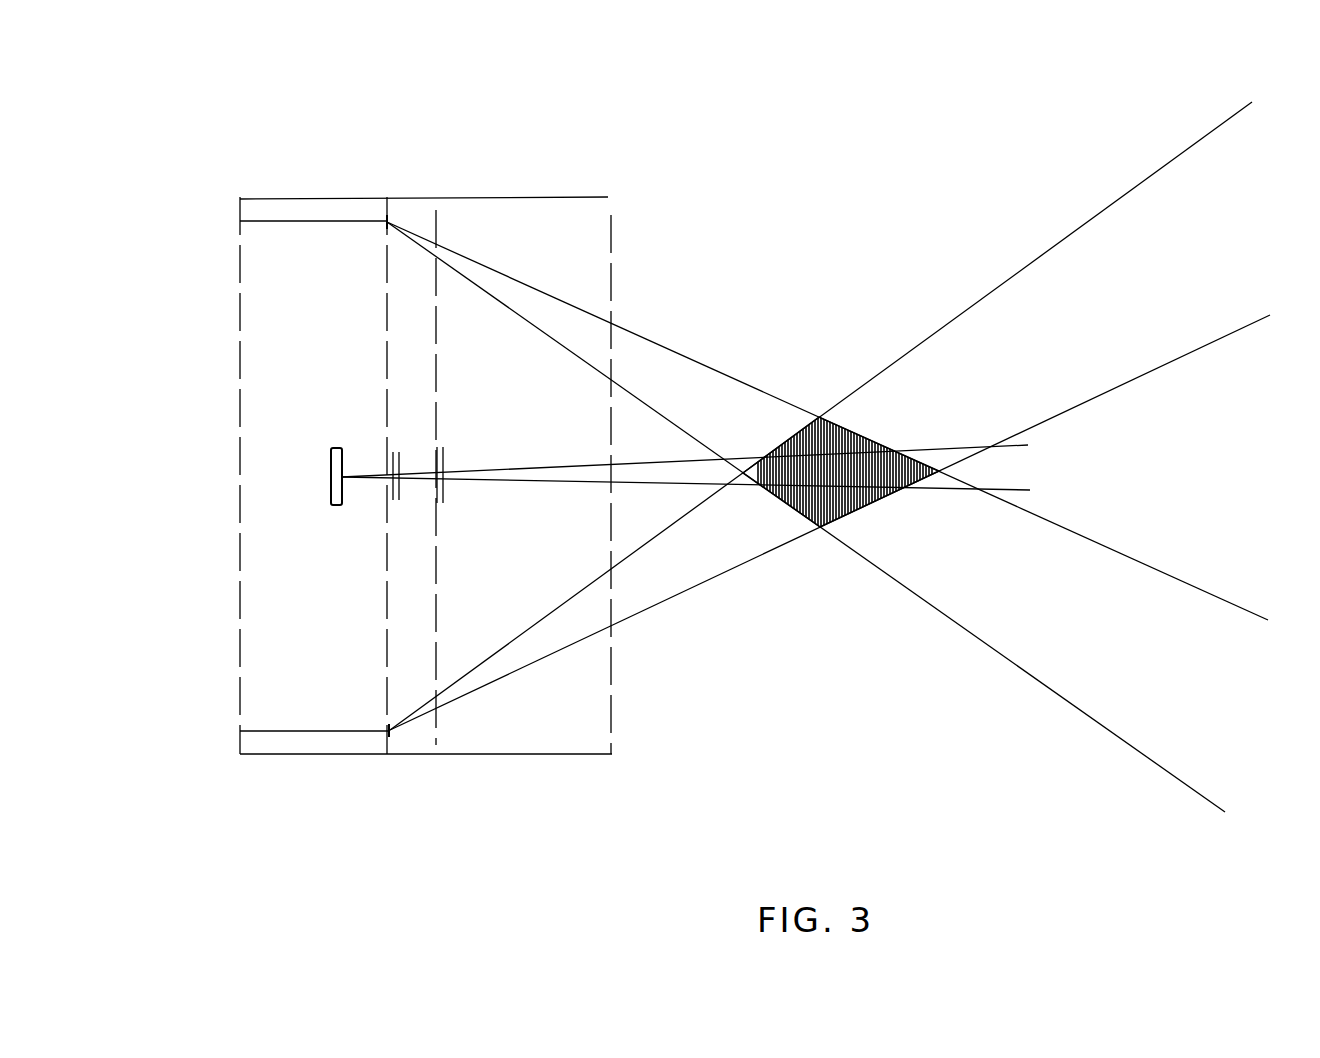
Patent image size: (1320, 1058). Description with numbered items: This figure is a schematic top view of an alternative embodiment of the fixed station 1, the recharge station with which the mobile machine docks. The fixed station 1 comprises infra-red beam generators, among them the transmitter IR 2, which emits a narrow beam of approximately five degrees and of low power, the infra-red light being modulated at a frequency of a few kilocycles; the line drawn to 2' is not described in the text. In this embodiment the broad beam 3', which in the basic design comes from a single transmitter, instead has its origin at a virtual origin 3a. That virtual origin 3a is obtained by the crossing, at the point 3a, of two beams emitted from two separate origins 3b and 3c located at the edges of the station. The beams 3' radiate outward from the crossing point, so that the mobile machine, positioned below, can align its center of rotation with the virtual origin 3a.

The fixed station 1 is at (294, 155).
The transmitter IR 2 is at (303, 528).
The image of the object 2' is at (691, 467).
The beam 3' is at (828, 457).
The virtual origin 3a is at (828, 523).
The origin 3b is at (387, 217).
The origin 3c is at (390, 731).